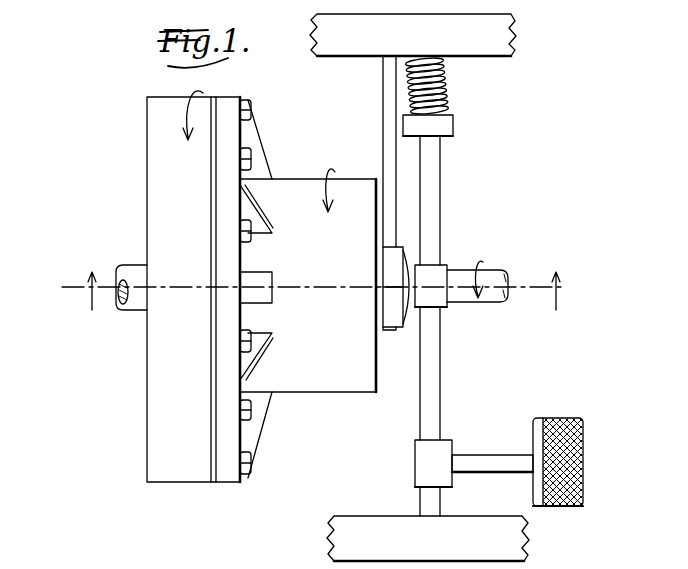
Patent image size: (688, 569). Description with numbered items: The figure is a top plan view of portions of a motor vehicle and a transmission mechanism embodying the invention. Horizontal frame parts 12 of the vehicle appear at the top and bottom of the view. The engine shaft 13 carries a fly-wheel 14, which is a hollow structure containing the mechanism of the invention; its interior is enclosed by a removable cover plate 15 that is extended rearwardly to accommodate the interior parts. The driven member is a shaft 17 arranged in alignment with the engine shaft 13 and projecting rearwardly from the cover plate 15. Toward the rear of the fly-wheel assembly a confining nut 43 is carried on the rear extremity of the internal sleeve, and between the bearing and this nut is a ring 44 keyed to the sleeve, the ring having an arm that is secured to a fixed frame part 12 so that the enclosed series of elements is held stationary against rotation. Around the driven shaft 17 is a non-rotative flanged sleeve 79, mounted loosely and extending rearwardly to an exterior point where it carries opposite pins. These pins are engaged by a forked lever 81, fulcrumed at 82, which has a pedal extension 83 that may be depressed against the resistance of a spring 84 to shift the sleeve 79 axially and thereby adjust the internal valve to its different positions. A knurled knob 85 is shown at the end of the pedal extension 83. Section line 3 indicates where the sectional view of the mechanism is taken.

The section line 3 is at (66, 287).
The horizontal frame parts 12 is at (419, 287).
The engine shaft 13 is at (137, 305).
The fly-wheel 14 is at (193, 286).
The removable cover plate 15 is at (296, 289).
The driven shaft 17 is at (490, 280).
The confining nut 43 is at (414, 328).
The ring 44 is at (385, 103).
The flanged sleeve 79 is at (412, 268).
The forked lever 81 is at (441, 272).
The fulcrum 82 is at (442, 392).
The pedal extension 83 is at (488, 468).
The spring 84 is at (447, 96).
The knob 85 is at (573, 462).